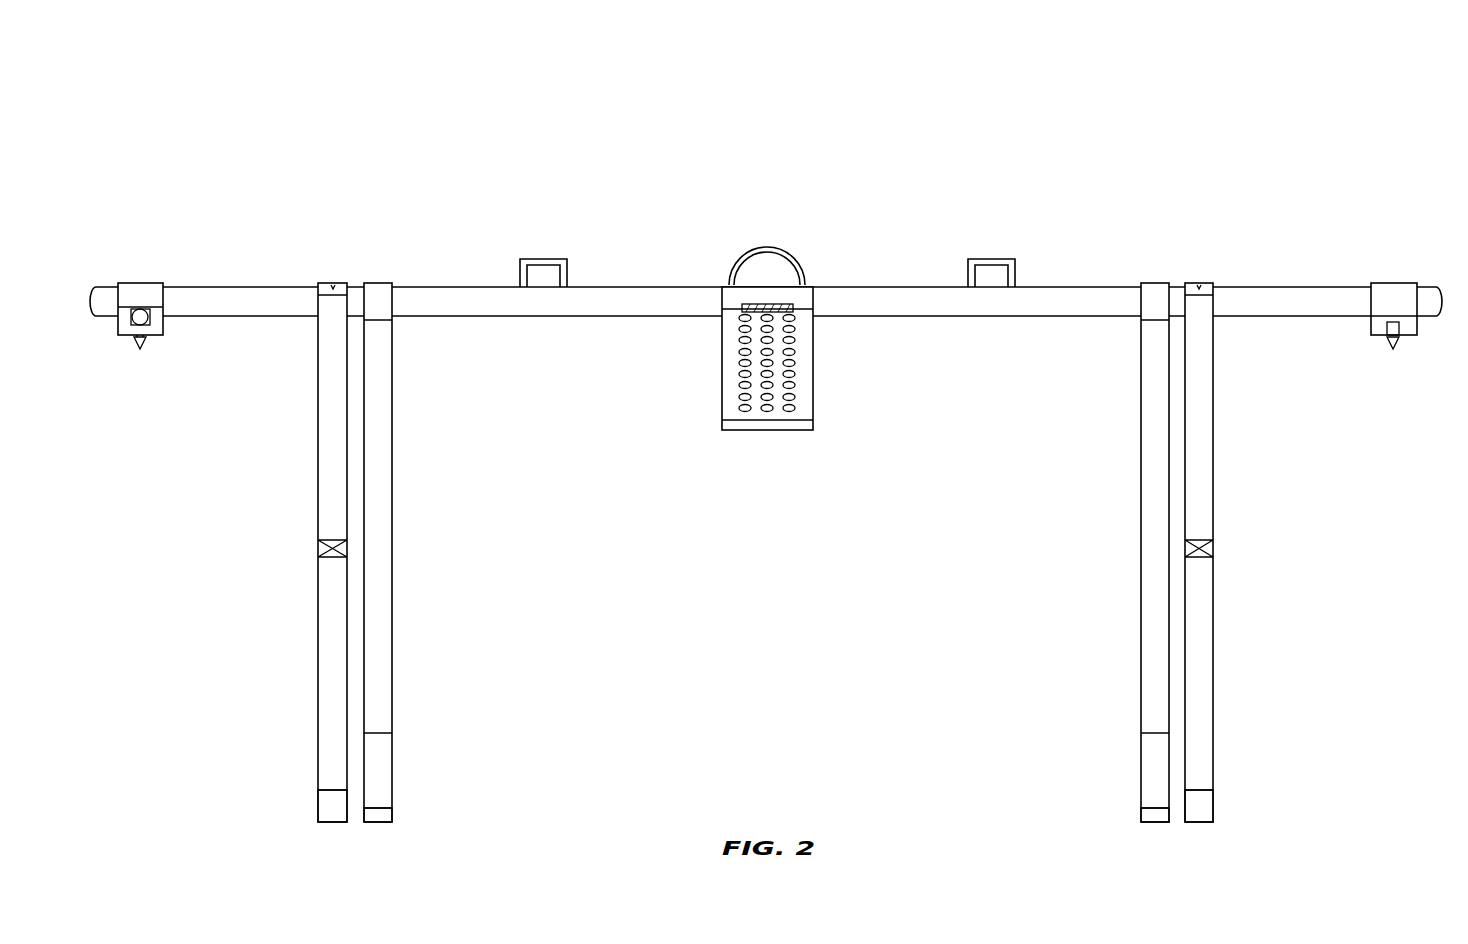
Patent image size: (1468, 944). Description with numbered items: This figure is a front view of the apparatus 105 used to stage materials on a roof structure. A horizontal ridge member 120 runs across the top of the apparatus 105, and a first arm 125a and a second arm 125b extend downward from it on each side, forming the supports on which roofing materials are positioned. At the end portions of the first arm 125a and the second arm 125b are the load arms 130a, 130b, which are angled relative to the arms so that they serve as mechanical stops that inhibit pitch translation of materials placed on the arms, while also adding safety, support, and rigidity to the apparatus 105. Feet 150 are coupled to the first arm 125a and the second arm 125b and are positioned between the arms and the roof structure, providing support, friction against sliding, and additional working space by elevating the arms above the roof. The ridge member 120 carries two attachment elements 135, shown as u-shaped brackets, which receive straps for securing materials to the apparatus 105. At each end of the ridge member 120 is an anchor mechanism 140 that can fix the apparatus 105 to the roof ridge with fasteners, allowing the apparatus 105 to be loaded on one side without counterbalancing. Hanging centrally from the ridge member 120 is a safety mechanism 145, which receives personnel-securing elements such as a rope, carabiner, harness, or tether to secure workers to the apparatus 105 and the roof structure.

The apparatus 105 is at (769, 443).
The ridge member 120 is at (888, 295).
The first arm 125a is at (392, 468).
The second arm 125b is at (318, 468).
The load arm 130a is at (392, 658).
The load arm 130b is at (290, 692).
The attachment element 135 is at (545, 259).
The anchor mechanism 140 is at (138, 292).
The safety mechanism 145 is at (722, 395).
The feet 150 is at (318, 804).